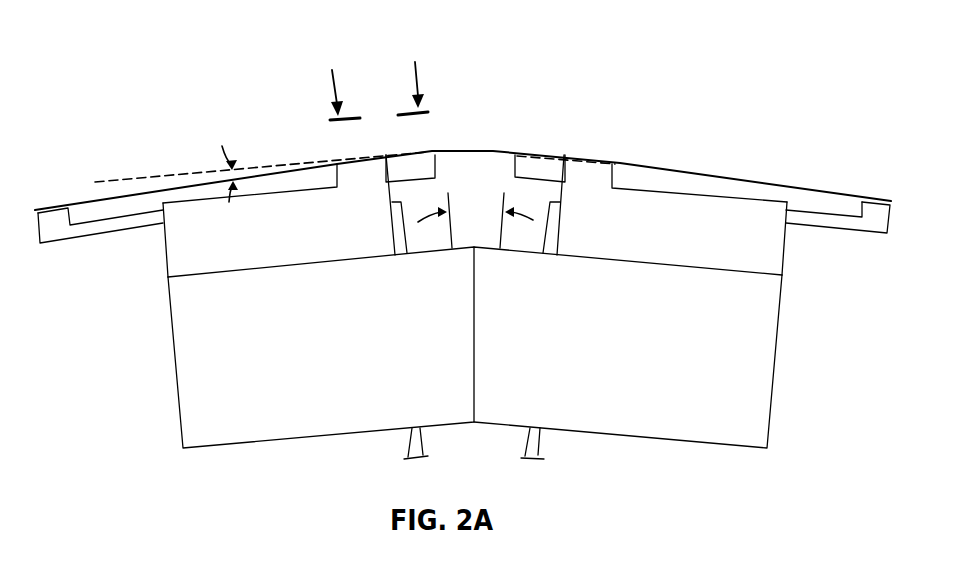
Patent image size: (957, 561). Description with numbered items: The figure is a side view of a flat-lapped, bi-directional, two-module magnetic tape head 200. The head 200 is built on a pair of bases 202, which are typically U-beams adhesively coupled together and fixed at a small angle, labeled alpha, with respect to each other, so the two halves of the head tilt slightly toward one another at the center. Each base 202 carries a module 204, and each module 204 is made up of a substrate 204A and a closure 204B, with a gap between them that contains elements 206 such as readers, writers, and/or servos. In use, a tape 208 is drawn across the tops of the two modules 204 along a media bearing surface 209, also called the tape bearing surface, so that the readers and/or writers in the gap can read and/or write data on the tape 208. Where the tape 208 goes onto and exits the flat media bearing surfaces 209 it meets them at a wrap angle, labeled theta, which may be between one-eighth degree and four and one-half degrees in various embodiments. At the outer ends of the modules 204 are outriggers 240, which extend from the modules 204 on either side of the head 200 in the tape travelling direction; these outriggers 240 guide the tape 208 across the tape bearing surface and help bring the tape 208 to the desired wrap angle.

The magnetic tape head 200 is at (212, 120).
The base 202 is at (173, 340).
The module 204 is at (164, 252).
The substrate 204A is at (187, 210).
The closure 204B is at (515, 167).
The elements 206 is at (391, 146).
The tape 208 is at (702, 177).
The media bearing surface 209 is at (341, 156).
The outrigger 240 is at (55, 223).